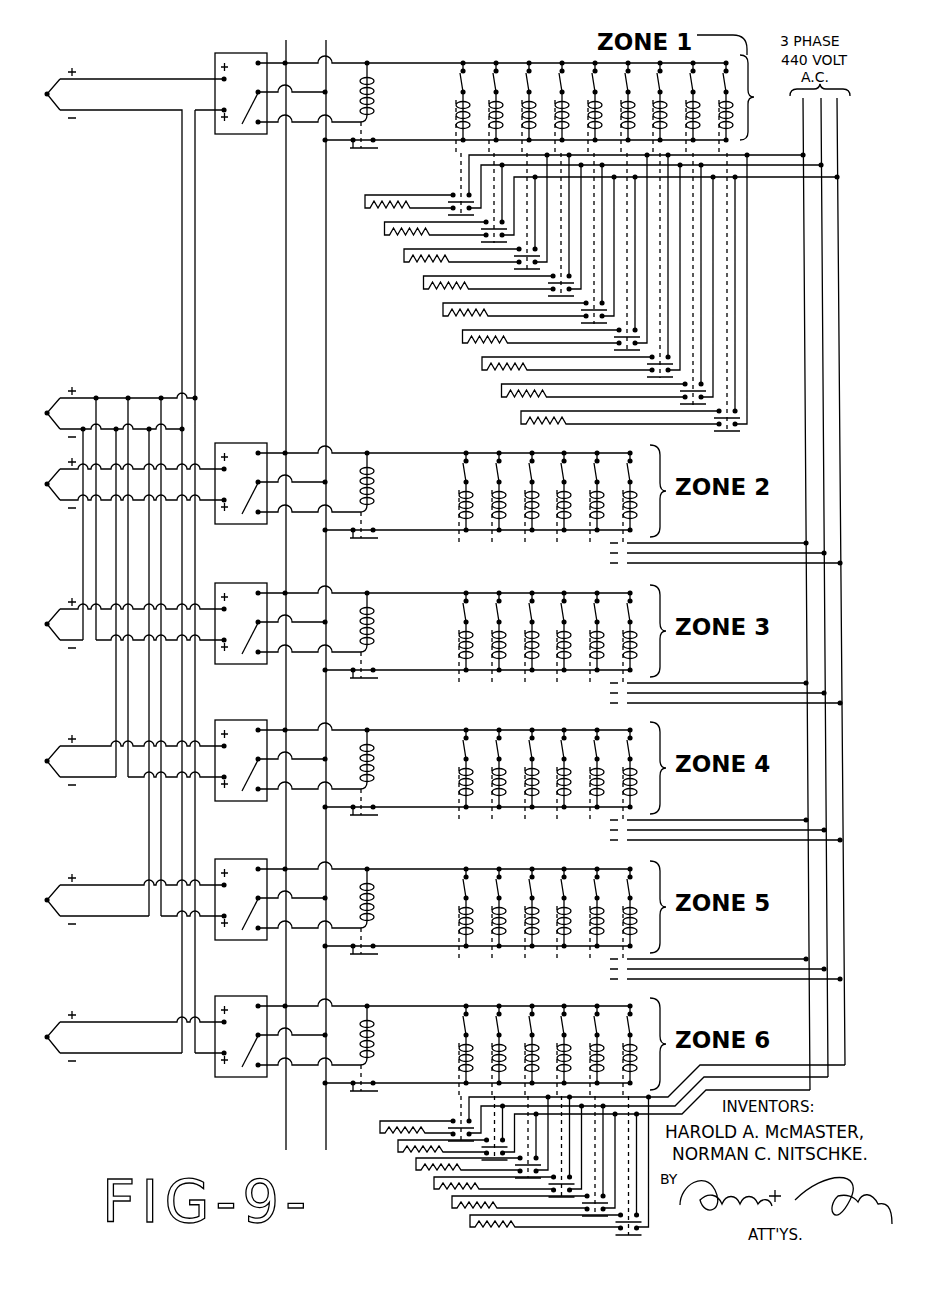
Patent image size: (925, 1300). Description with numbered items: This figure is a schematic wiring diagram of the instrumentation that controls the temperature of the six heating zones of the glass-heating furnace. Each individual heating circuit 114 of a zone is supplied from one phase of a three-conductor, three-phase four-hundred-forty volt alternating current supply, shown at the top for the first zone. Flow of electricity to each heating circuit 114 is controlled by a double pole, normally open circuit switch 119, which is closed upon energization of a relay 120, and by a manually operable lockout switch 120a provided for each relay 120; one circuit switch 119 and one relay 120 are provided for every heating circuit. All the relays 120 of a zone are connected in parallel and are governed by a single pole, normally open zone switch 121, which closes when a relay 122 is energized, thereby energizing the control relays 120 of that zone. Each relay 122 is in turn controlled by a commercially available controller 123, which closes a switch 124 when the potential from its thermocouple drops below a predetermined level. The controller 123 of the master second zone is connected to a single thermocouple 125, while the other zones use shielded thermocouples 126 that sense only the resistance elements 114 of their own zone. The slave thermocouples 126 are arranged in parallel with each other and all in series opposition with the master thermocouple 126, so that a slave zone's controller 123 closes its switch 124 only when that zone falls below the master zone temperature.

The heating circuit 114 is at (394, 237).
The circuit switch 119 is at (461, 203).
The relay 120 is at (494, 129).
The lockout switch 120a is at (562, 82).
The zone switch 121 is at (373, 140).
The relay 122 is at (371, 86).
The controller 123 is at (228, 51).
The switch 124 is at (260, 123).
The thermocouple 125 is at (47, 484).
The thermocouple 126 is at (47, 94).